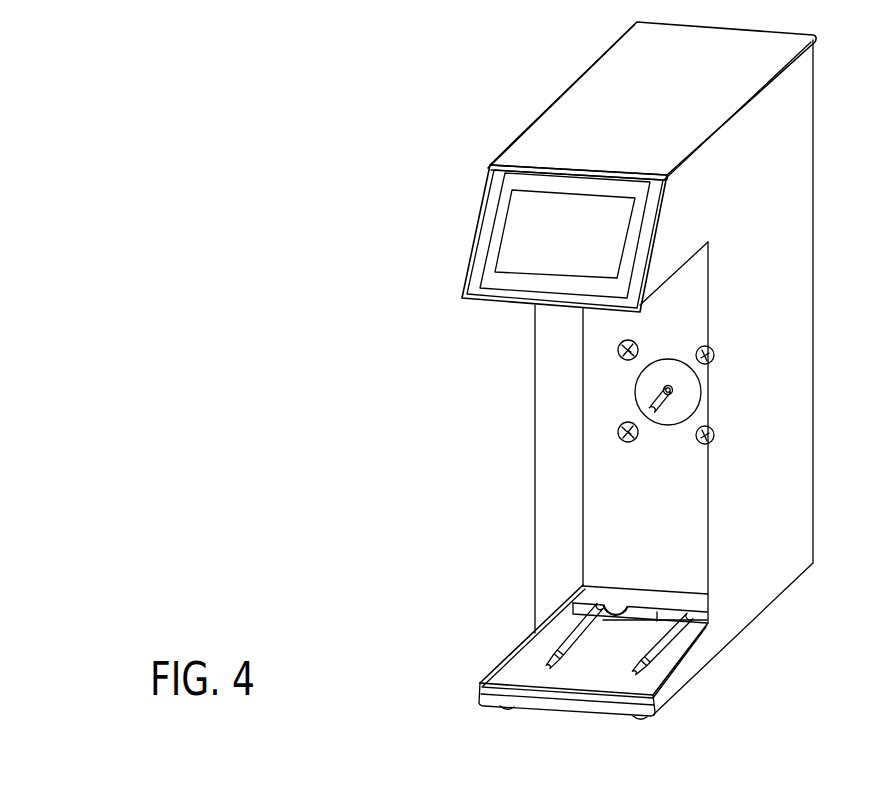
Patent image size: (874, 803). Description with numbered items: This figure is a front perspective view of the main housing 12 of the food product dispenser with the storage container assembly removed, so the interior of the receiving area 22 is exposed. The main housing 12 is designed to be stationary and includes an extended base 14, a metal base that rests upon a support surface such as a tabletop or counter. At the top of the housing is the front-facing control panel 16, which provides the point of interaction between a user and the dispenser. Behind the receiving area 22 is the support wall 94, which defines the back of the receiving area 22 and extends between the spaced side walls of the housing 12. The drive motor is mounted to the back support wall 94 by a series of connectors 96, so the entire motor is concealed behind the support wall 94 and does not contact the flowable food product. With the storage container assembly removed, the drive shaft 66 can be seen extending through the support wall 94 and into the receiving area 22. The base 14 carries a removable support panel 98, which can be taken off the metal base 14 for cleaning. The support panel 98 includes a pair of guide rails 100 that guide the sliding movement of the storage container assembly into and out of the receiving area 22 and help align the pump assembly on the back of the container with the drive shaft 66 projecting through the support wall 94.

The main housing 12 is at (803, 360).
The extended base 14 is at (677, 683).
The front-facing control panel 16 is at (566, 252).
The receiving area 22 is at (703, 320).
The drive shaft 66 is at (665, 405).
The support wall 94 is at (593, 365).
The connectors 96 is at (620, 437).
The removable support panel 98 is at (510, 668).
The guide rails 100 is at (630, 668).